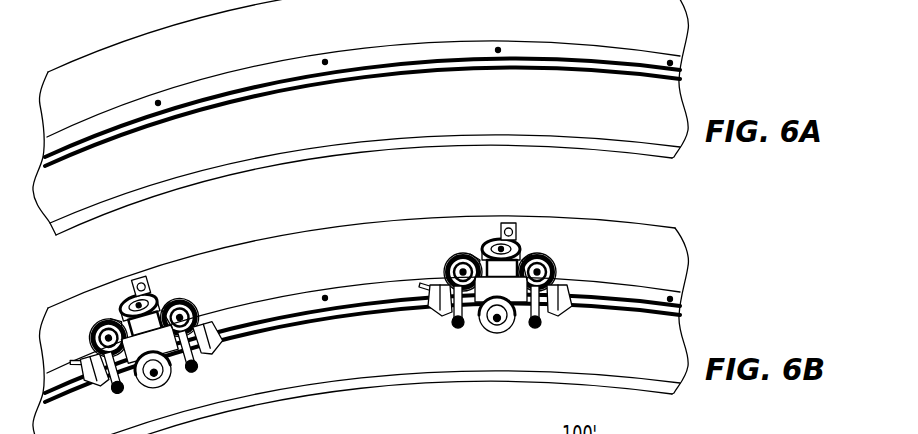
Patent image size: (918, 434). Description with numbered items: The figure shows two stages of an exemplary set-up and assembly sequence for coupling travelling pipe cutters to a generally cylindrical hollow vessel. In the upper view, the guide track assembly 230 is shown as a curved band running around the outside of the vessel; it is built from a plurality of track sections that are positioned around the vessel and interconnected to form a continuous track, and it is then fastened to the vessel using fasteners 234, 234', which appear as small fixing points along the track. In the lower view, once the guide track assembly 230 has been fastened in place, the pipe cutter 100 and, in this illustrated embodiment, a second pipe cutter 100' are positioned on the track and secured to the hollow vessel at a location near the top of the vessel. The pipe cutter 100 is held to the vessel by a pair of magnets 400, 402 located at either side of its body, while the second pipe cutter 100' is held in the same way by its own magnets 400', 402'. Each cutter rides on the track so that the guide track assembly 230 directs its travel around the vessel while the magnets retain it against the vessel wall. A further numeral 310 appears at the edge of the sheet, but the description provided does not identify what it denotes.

In FIG. 6B, the pipe cutter 100 is at (122, 337).
In FIG. 6B, the second pipe cutter 100' is at (509, 258).
In FIG. 6A, the guide track assembly 230 is at (556, 52).
In FIG. 6A, the fastener 234 is at (176, 72).
In FIG. 6A, the fastener 234' is at (345, 33).
In FIG. 6B, the track 310 is at (411, 424).
In FIG. 6B, the magnet 400 is at (235, 349).
In FIG. 6B, the magnet 400' is at (583, 321).
In FIG. 6B, the magnet 402 is at (85, 393).
In FIG. 6B, the magnet 402' is at (415, 321).